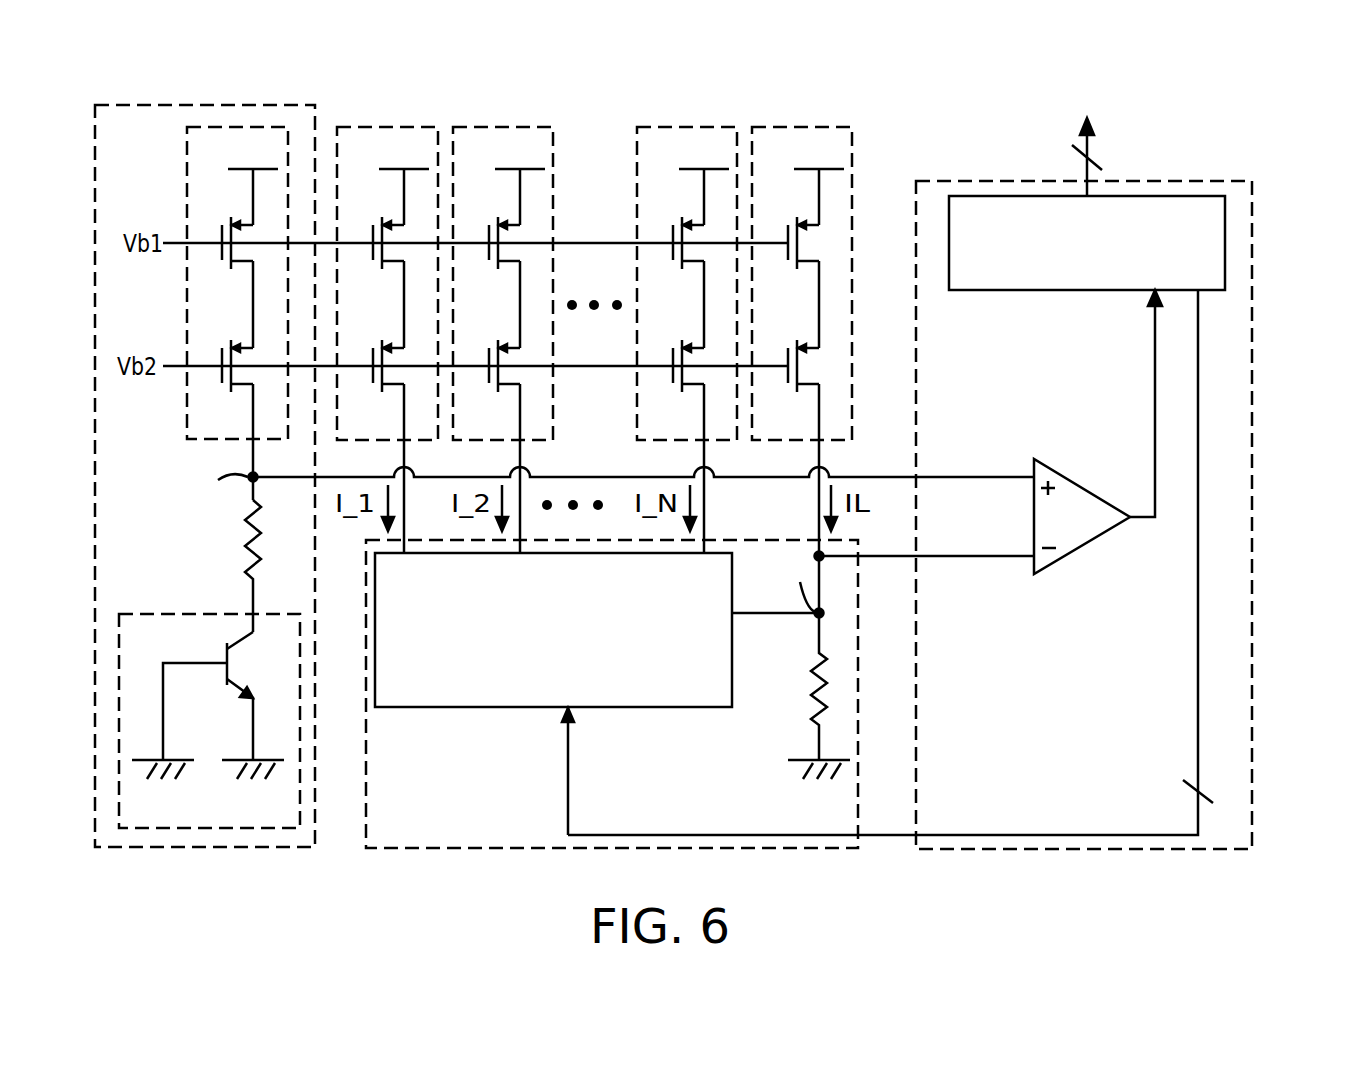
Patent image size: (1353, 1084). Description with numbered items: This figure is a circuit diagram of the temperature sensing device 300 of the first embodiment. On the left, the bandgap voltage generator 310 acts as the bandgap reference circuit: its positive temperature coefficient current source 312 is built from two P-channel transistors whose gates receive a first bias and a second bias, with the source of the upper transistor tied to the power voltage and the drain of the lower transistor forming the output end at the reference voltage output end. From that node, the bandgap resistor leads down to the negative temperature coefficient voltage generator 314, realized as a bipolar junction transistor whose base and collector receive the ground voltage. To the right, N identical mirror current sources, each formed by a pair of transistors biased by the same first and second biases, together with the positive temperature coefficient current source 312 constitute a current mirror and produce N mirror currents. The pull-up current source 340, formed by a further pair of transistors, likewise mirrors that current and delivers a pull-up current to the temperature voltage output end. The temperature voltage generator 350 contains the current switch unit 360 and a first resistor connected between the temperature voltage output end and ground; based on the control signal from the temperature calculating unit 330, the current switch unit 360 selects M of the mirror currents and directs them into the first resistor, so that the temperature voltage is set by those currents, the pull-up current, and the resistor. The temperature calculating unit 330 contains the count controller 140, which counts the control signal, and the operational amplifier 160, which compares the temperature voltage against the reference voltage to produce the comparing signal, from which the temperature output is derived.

The temperature sensing device 300 is at (1258, 899).
The bandgap voltage generator 310 is at (272, 105).
The positive temperature coefficient current source 312 is at (186, 177).
The negative temperature coefficient voltage generator 314 is at (185, 612).
The pull-up current source 340 is at (825, 126).
The temperature voltage generator 350 is at (740, 540).
The current switch unit 360 is at (670, 708).
The temperature calculating unit 330 is at (1218, 180).
The count controller 140 is at (1226, 243).
The operational amplifier 160 is at (1088, 489).